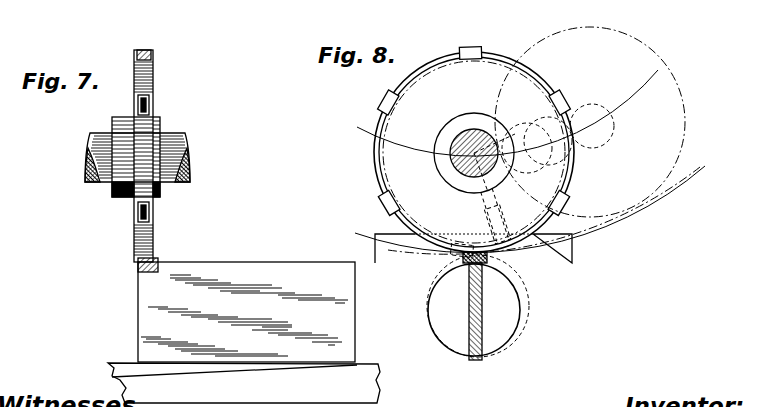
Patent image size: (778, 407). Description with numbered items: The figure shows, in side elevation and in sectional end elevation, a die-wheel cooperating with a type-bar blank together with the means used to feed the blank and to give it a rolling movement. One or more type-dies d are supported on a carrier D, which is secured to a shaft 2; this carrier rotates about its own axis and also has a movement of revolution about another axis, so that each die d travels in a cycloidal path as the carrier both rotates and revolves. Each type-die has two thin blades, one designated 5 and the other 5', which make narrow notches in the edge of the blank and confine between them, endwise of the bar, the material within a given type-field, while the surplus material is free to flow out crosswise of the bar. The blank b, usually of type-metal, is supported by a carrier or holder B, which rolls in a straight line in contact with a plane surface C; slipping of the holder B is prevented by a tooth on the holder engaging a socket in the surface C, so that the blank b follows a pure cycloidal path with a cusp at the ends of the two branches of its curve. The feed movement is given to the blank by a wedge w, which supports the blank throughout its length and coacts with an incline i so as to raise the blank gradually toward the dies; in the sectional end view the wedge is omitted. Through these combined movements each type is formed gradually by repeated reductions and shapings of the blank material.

In FIG. 7, the carrier D is at (153, 90).
In FIG. 8, the carrier D is at (474, 152).
In FIG. 7, the type-die d is at (153, 56).
In FIG. 8, the type-die d is at (481, 48).
In FIG. 7, the shaft 2 is at (90, 165).
In FIG. 8, the shaft 2 is at (462, 172).
In FIG. 7, the blade 5 is at (126, 69).
In FIG. 7, the blade 5' is at (177, 63).
In FIG. 7, the blank b is at (246, 312).
In FIG. 8, the blank b is at (482, 322).
In FIG. 7, the incline i is at (257, 370).
In FIG. 7, the wedge w is at (119, 363).
In FIG. 8, the plane surface C is at (572, 258).
In FIG. 8, the holder B is at (458, 343).